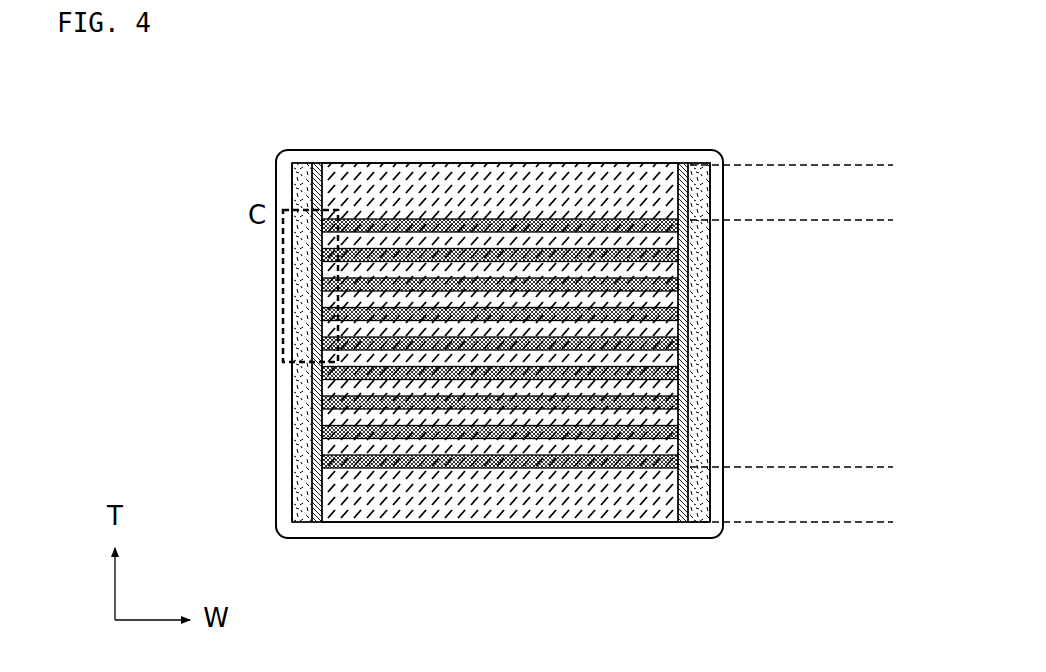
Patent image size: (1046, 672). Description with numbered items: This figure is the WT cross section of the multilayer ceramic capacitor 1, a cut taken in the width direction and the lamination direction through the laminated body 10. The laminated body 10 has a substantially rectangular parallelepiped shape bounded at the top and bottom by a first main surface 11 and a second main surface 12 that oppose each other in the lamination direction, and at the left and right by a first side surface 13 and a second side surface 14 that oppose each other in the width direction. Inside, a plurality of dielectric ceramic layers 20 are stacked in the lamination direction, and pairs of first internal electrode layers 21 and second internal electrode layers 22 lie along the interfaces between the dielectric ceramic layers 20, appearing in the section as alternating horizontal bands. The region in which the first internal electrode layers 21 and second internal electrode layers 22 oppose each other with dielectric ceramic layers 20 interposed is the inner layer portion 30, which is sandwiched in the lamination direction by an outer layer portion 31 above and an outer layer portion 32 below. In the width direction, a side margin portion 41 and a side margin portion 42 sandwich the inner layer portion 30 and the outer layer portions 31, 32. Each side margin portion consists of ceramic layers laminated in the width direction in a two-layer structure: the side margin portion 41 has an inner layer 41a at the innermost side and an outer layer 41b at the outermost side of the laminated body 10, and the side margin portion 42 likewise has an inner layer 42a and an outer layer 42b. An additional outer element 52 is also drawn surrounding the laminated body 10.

The multilayer ceramic capacitor 1 is at (236, 118).
The laminated body 10 is at (645, 160).
The first main surface 11 is at (393, 163).
The second main surface 12 is at (612, 523).
The first side surface 13 is at (292, 462).
The second side surface 14 is at (710, 402).
The dielectric ceramic layers 20 is at (498, 388).
The first internal electrode layers 21 is at (512, 335).
The second internal electrode layers 22 is at (573, 304).
The inner layer portion 30 is at (893, 220).
The outer layer portion 31 is at (893, 165).
The outer layer portion 32 is at (893, 467).
The side margin portion 41 is at (219, 342).
The inner layer 41a is at (316, 391).
The outer layer 41b is at (300, 428).
The side margin portion 42 is at (780, 342).
The inner layer 42a is at (698, 286).
The outer layer 42b is at (697, 330).
The exterior layer 52 is at (320, 160).